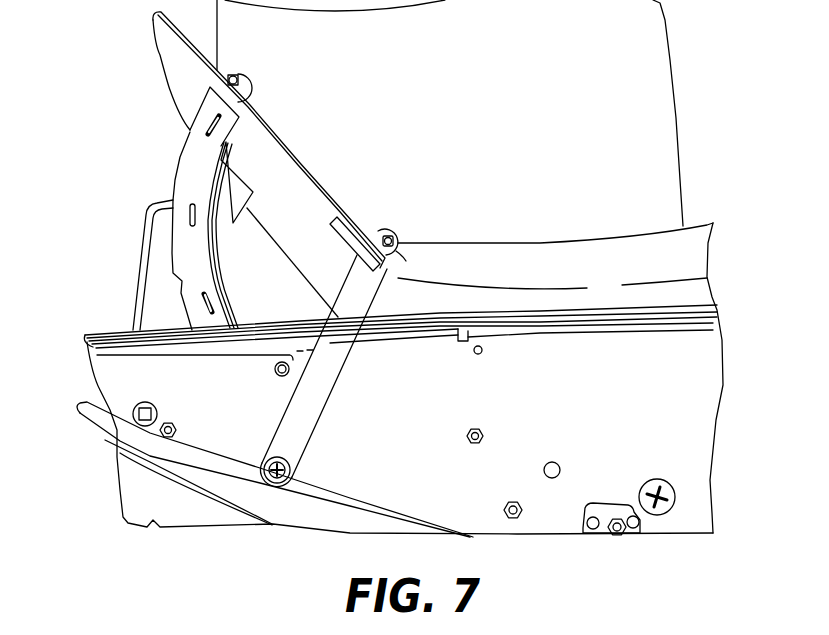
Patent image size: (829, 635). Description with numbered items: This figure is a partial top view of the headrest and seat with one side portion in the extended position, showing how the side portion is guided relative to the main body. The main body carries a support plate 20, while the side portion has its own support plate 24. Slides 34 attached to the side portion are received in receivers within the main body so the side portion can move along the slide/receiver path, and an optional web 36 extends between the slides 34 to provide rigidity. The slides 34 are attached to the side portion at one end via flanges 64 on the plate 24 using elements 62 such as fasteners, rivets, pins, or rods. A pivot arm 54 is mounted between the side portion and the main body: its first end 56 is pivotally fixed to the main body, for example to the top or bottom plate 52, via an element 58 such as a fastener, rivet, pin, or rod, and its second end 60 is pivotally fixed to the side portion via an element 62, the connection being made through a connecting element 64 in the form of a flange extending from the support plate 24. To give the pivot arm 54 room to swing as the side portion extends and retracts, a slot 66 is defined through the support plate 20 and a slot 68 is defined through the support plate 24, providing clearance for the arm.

The plate 20 is at (659, 306).
The plate 24 is at (193, 45).
The slide 34 is at (183, 237).
The web 36 is at (203, 198).
The top or bottom plate 52 is at (445, 497).
The pivot arm 54 is at (330, 373).
The first end 56 is at (293, 455).
The element 58 is at (292, 467).
The second end 60 is at (400, 250).
The element 62 is at (233, 73).
The flange 64 is at (252, 99).
The slot 66 is at (390, 341).
The slot 68 is at (340, 230).